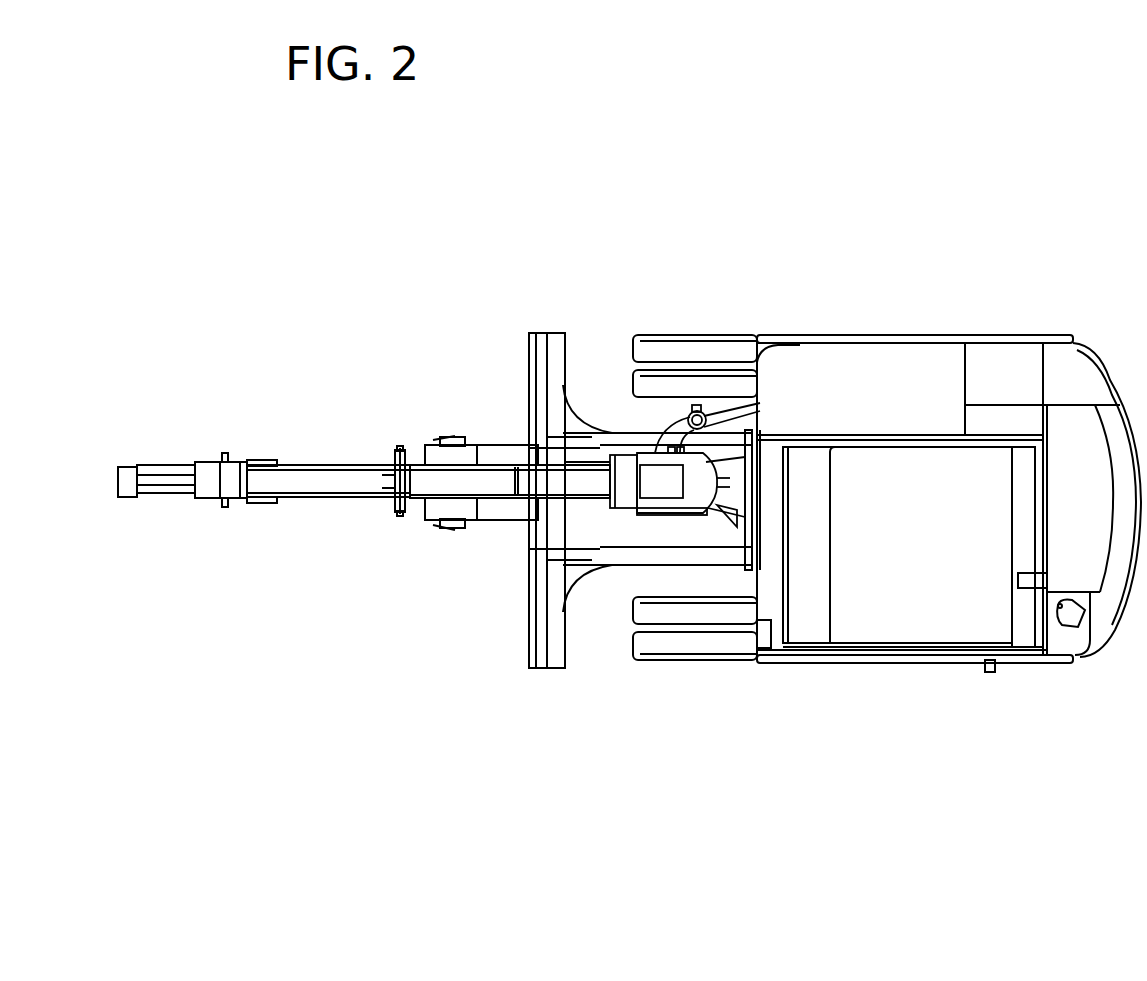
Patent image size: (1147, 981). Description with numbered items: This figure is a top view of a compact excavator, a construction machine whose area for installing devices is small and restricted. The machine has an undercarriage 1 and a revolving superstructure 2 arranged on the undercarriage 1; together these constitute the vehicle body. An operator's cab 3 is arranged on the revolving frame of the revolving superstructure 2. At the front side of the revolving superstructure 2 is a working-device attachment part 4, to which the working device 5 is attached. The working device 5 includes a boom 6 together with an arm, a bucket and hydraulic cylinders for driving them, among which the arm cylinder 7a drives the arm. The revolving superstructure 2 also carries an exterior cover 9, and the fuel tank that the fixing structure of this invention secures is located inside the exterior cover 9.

The undercarriage 1 is at (692, 653).
The revolving superstructure 2 is at (840, 653).
The operator's cab 3 is at (938, 617).
The working-device attachment part 4 is at (732, 482).
The working device 5 is at (322, 462).
The boom 6 is at (472, 485).
The arm cylinder 7a is at (318, 487).
The exterior cover 9 is at (855, 360).